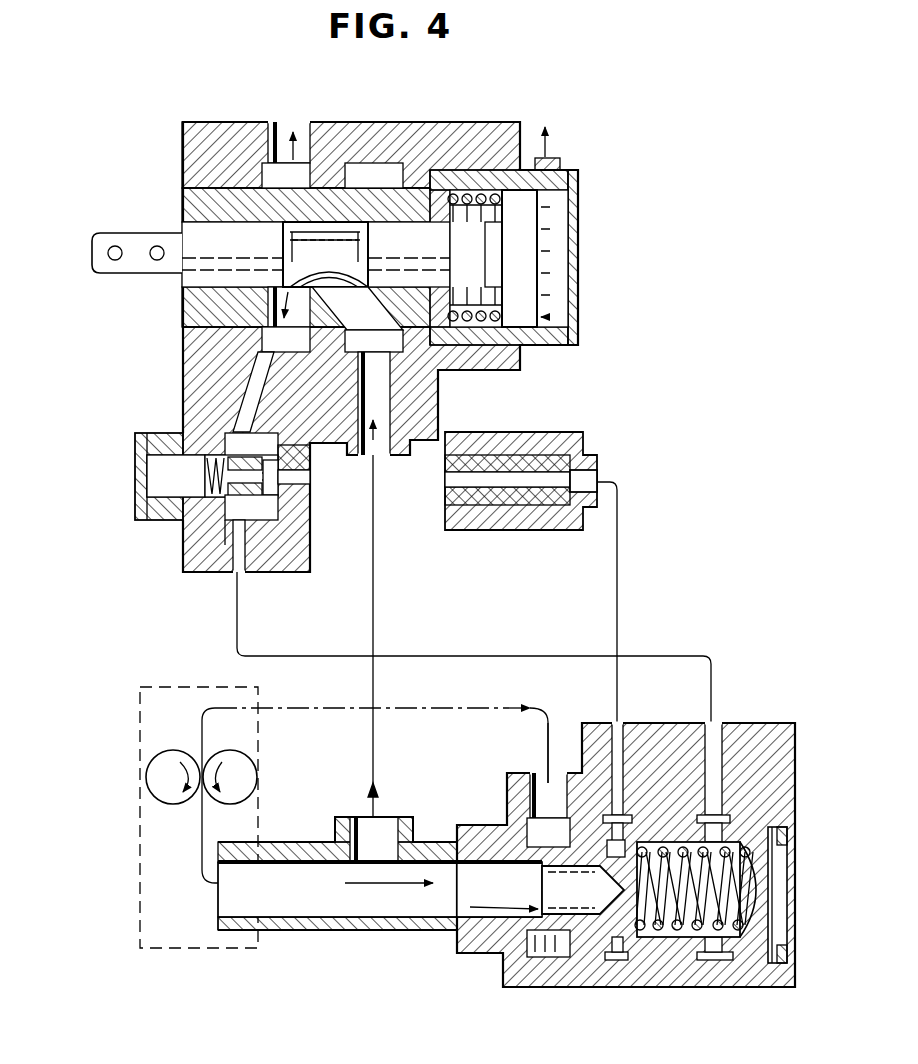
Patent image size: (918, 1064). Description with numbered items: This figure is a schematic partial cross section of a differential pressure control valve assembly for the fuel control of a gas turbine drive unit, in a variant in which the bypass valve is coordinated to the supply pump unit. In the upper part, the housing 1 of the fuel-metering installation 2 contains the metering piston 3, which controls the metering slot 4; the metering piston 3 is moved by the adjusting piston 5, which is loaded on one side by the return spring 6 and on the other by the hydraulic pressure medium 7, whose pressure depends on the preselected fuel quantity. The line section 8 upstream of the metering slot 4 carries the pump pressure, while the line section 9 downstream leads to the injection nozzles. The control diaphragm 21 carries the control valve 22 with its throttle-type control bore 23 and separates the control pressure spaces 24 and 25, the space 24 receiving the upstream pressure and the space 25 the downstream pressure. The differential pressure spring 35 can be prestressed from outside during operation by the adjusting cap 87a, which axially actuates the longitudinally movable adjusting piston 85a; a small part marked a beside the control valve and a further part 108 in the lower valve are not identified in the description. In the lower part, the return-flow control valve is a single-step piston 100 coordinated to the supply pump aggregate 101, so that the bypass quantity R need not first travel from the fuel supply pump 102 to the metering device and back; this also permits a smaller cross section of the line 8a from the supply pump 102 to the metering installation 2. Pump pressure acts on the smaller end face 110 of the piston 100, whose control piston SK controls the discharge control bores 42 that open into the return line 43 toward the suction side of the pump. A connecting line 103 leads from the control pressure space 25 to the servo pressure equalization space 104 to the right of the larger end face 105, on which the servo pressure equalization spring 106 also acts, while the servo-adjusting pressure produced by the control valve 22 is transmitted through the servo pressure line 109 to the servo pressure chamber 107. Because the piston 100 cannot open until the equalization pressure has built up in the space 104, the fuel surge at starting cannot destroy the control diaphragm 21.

The housing 1 is at (392, 122).
The fuel-metering installation 2 is at (180, 229).
The metering piston 3 is at (231, 257).
The metering slot 4 is at (271, 359).
The adjusting piston 5 is at (523, 252).
The return spring 6 is at (470, 195).
The hydraulic pressure medium 7 is at (549, 205).
The line section 8 is at (390, 384).
The line 8a is at (378, 487).
The line section 9 is at (278, 122).
The control diaphragm 21 is at (252, 541).
The control valve 22 is at (280, 462).
The control bore 23 is at (272, 521).
The control pressure space 24 is at (278, 538).
The control pressure space 25 is at (226, 568).
The differential pressure spring 35 is at (228, 440).
The valve piston a is at (279, 505).
The adjusting piston 85a is at (141, 453).
The adjusting cap 87a is at (141, 484).
The discharge control bores 42 is at (552, 958).
The return line 43 is at (530, 776).
The regulator return-flow quantity R is at (548, 742).
The control piston SK is at (546, 881).
The single-step piston 100 is at (652, 941).
The supply pump aggregate 101 is at (318, 934).
The fuel supply pump 102 is at (150, 763).
The connecting line 103 is at (433, 656).
The servo pressure equalization space 104 is at (755, 946).
The larger end face 105 is at (680, 941).
The servo pressure equalization spring 106 is at (715, 941).
The servo pressure chamber 107 is at (612, 841).
The lower control valve 108 is at (607, 956).
The servo pressure line 109 is at (620, 579).
The smaller end face 110 is at (485, 906).